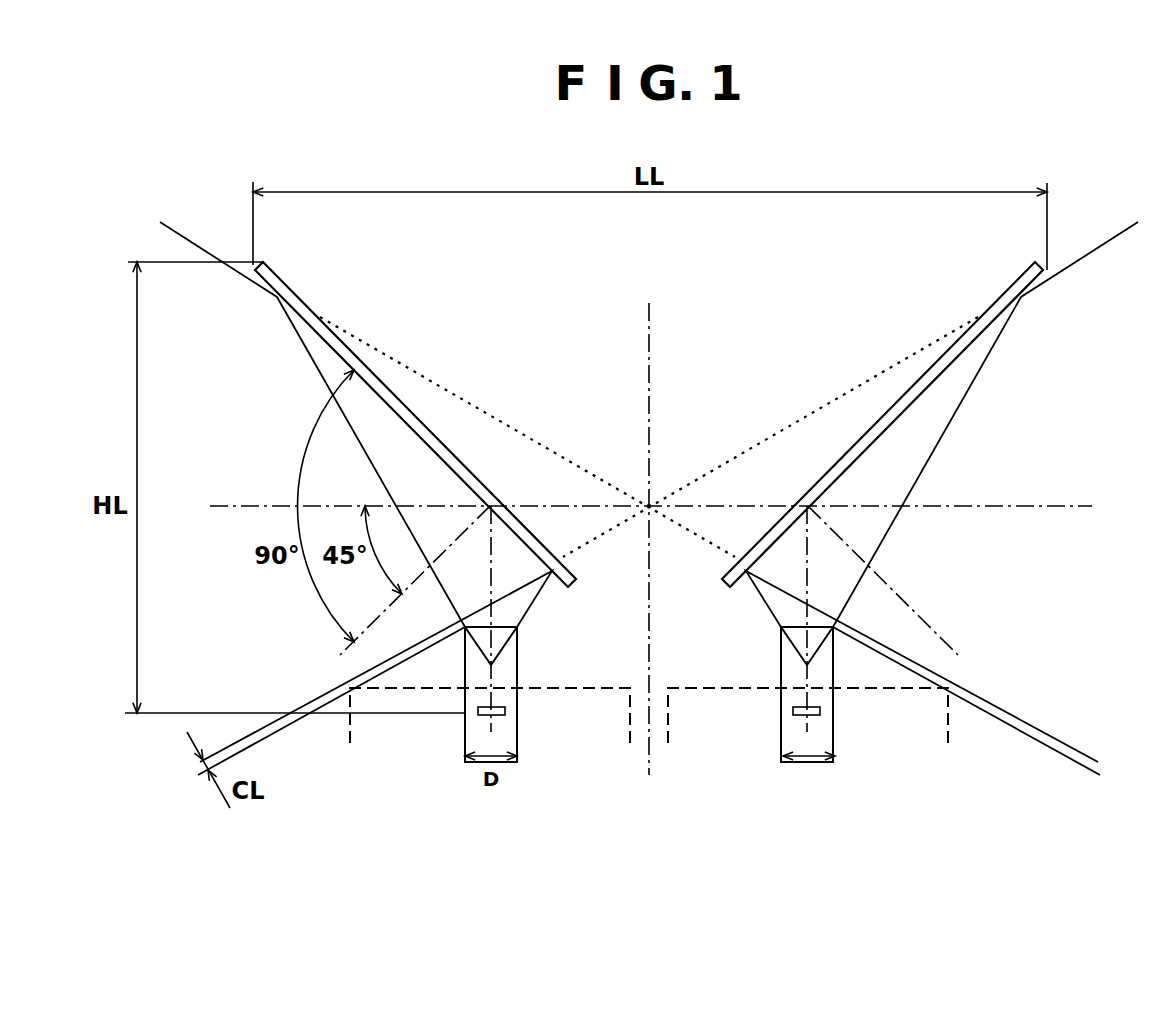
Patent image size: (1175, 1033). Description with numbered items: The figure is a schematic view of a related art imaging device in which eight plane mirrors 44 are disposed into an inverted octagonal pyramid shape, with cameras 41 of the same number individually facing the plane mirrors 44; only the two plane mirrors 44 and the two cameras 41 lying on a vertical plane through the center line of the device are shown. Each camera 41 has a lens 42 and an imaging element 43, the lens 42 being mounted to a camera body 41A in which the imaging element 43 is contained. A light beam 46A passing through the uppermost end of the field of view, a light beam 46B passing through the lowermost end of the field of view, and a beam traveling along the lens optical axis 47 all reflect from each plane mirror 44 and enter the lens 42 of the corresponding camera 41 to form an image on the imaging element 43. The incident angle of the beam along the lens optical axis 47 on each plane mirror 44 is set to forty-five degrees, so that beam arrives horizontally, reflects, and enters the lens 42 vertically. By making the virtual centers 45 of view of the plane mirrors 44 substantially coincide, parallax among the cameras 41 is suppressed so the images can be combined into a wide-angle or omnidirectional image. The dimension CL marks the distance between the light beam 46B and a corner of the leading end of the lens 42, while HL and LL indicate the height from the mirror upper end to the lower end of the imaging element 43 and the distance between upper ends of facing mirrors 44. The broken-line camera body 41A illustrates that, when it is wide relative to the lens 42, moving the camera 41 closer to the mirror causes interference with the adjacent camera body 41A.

The camera 41 is at (535, 793).
The camera body 41A is at (350, 735).
The lens 42 is at (517, 648).
The imaging element 43 is at (505, 711).
The plane mirror 44 is at (353, 340).
The virtual center of view 45 is at (651, 505).
The light beam passing through uppermost end of field of view 46A is at (192, 240).
The light beam passing through lowermost end of field of view 46B is at (313, 699).
The lens optical axis 47 is at (808, 573).